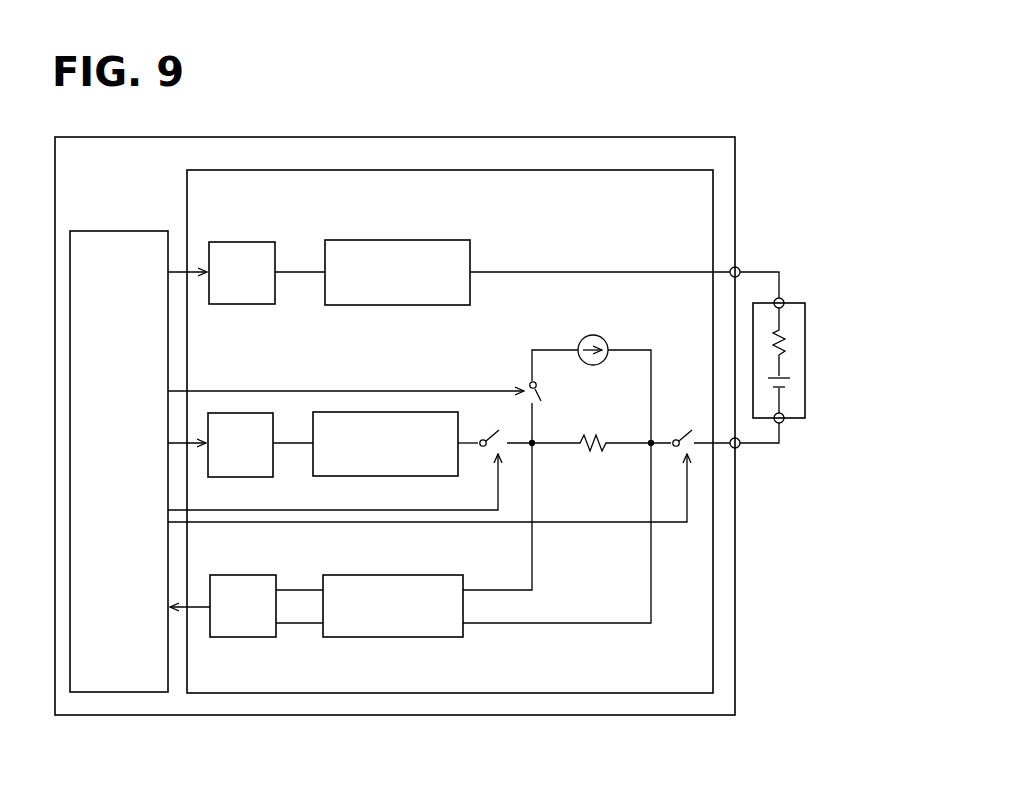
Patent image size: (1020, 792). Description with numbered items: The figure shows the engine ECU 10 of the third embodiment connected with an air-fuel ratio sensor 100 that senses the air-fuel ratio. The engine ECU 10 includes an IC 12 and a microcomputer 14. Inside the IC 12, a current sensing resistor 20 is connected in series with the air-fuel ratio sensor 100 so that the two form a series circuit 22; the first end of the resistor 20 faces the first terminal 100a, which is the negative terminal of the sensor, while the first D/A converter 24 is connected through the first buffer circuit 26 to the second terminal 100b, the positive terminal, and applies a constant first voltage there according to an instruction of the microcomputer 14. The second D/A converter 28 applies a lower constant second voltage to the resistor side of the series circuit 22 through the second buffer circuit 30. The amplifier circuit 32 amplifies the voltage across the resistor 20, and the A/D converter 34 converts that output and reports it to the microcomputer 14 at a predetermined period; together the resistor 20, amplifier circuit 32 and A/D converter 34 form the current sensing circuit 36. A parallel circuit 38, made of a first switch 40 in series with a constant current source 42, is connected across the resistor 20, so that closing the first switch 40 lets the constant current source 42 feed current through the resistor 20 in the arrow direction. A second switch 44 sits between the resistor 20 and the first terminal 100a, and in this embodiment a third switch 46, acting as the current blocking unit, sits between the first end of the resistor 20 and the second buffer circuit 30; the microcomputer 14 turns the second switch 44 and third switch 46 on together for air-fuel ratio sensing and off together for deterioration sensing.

The engine ECU 10 is at (723, 137).
The IC 12 is at (530, 170).
The microcomputer 14 is at (124, 231).
The resistor 20 is at (594, 454).
The series circuit 22 is at (801, 363).
The first D/A converter 24 is at (260, 242).
The first buffer circuit 26 is at (443, 240).
The second D/A converter 28 is at (274, 460).
The second buffer circuit 30 is at (458, 459).
The amplifier circuit 32 is at (445, 575).
The A/D converter 34 is at (256, 575).
The current sensing circuit 36 is at (244, 650).
The parallel circuit 38 is at (557, 456).
The first switch 40 is at (546, 398).
The constant current source 42 is at (594, 335).
The second switch 44 is at (679, 436).
The third switch 46 is at (491, 437).
The air-fuel ratio sensor 100 is at (807, 318).
The first terminal 100a is at (784, 428).
The second terminal 100b is at (786, 297).